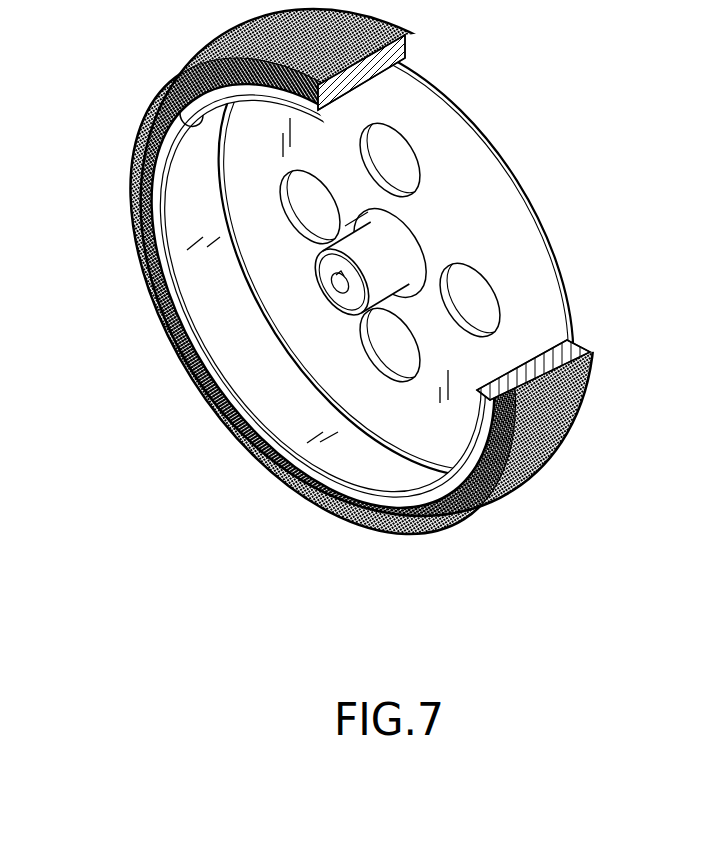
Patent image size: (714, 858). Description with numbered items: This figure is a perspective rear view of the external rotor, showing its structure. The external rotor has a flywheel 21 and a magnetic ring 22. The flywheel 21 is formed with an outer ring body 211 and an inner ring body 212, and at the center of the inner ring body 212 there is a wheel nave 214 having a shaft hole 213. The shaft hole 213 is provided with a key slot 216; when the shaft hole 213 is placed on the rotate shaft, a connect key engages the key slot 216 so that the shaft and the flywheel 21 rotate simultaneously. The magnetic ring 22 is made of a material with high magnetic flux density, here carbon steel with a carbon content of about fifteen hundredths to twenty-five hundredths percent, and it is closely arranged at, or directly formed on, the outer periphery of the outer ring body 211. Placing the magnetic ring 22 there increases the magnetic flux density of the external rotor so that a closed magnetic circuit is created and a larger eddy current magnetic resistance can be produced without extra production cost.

The flywheel 21 is at (157, 160).
The magnetic ring 22 is at (133, 192).
The outer ring body 211 is at (192, 124).
The inner ring body 212 is at (457, 150).
The shaft hole 213 is at (372, 283).
The wheel nave 214 is at (387, 240).
The key slot 216 is at (335, 288).